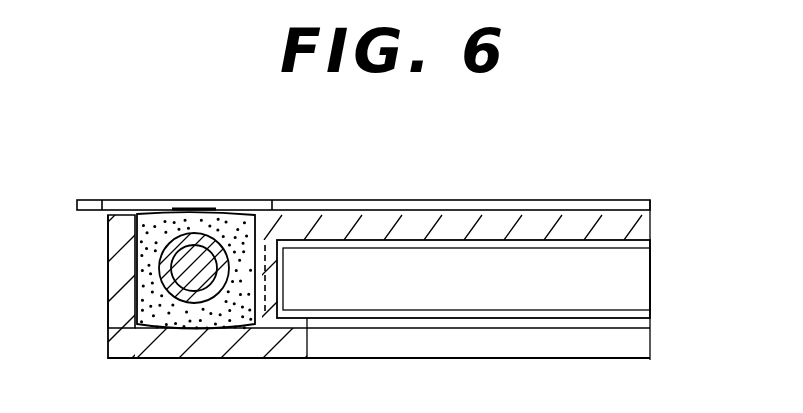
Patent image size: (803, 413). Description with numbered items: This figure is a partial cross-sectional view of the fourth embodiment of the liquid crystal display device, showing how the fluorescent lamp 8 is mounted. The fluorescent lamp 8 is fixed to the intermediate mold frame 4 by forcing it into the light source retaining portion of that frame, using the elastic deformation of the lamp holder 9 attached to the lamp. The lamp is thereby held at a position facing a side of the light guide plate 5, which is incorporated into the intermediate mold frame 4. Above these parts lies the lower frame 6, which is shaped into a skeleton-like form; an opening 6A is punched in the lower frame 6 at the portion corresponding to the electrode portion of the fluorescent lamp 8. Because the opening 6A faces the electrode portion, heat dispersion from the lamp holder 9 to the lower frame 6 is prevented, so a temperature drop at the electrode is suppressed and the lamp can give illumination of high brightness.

The intermediate mold frame 4 is at (120, 278).
The light guide plate 5 is at (470, 263).
The lower frame 6 is at (350, 201).
The opening 6A is at (240, 205).
The fluorescent lamp 8 is at (170, 290).
The lamp holder 9 is at (174, 215).